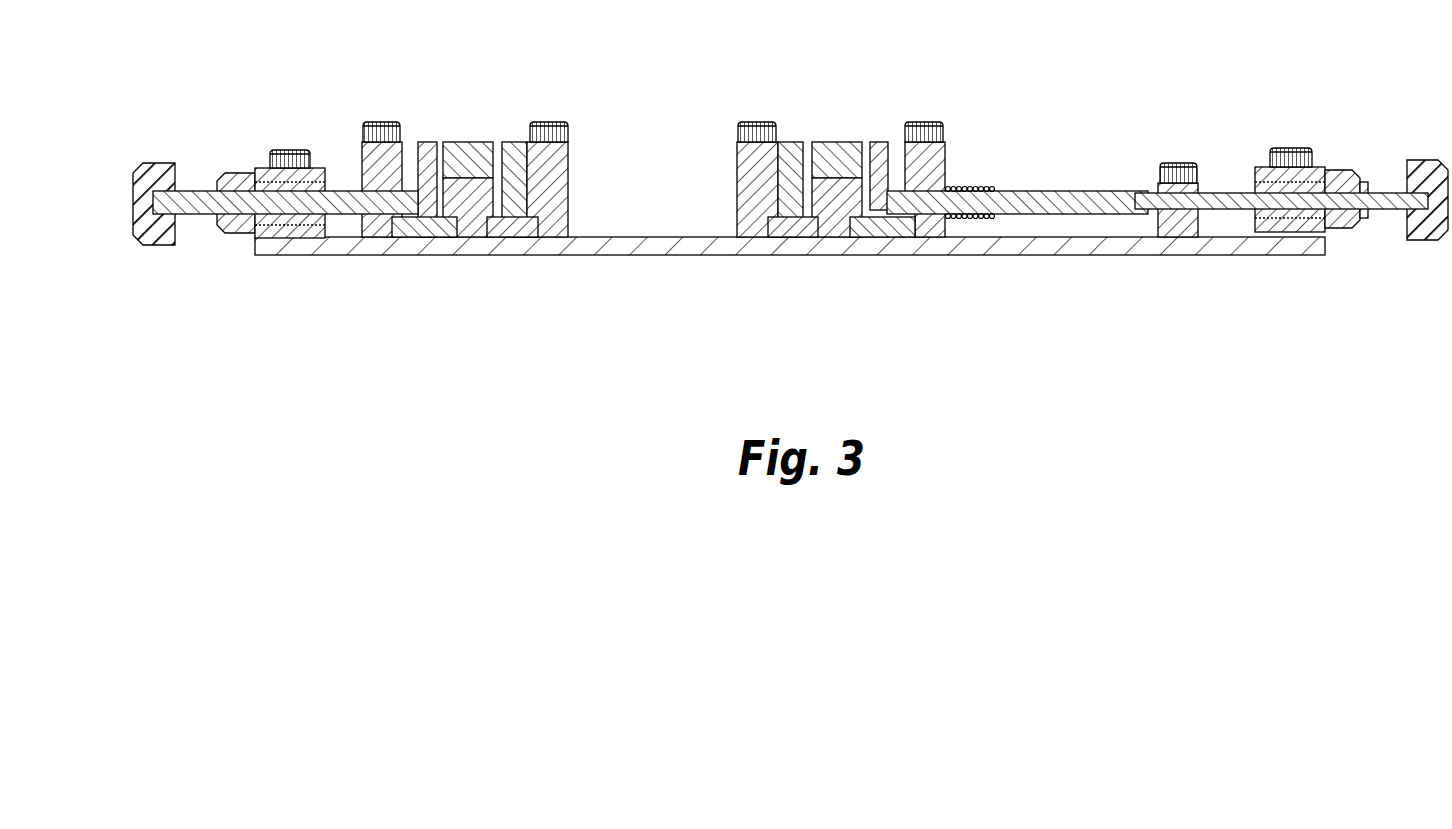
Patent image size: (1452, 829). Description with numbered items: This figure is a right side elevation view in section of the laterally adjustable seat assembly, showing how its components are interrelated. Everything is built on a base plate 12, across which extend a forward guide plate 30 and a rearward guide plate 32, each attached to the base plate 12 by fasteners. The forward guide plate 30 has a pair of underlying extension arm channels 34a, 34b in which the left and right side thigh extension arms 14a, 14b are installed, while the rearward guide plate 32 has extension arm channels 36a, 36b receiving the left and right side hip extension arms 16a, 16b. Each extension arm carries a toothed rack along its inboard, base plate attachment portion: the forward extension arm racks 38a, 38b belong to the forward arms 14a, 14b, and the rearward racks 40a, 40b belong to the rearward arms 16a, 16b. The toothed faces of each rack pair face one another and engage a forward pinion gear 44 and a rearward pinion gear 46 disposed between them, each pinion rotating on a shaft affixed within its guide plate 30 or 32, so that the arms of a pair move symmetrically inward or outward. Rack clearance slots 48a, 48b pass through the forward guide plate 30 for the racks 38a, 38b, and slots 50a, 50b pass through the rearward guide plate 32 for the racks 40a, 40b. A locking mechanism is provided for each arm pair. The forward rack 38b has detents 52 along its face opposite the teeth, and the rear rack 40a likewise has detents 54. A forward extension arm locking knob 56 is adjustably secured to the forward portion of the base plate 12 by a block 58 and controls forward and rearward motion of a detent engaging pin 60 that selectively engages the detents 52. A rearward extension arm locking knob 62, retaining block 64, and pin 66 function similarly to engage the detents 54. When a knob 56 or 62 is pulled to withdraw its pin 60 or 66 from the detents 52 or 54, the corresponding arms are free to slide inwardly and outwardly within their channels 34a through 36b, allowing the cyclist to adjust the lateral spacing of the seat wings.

The base plate 12 is at (632, 256).
The left side thigh extension arm 14a is at (797, 238).
The right side thigh extension arm 14b is at (882, 238).
The left side hip extension arm 16a is at (418, 238).
The right side hip extension arm 16b is at (498, 238).
The forward guide plate 30 is at (845, 198).
The rearward guide plate 32 is at (492, 189).
The extension arm channel 34a is at (768, 238).
The extension arm channel 34b is at (912, 238).
The extension arm channel 36a is at (398, 238).
The extension arm channel 36b is at (530, 238).
The forward extension arm rack 38a is at (876, 142).
The forward extension arm rack 38b is at (793, 142).
The rearward rack 40a is at (426, 142).
The rearward rack 40b is at (512, 142).
The forward pinion gear 44 is at (845, 142).
The rearward pinion gear 46 is at (482, 142).
The rack clearance slot 48a is at (776, 212).
The rack clearance slot 48b is at (893, 168).
The rack clearance slot 50a is at (406, 142).
The rack clearance slot 50b is at (525, 190).
The detents 52 is at (896, 150).
The detents 54 is at (420, 183).
The forward extension arm locking knob 56 is at (1422, 160).
The block 58 is at (1262, 167).
The detent engaging pin 60 is at (1072, 190).
The rearward extension arm locking knob 62 is at (160, 163).
The retaining block 64 is at (258, 170).
The pin 66 is at (322, 256).